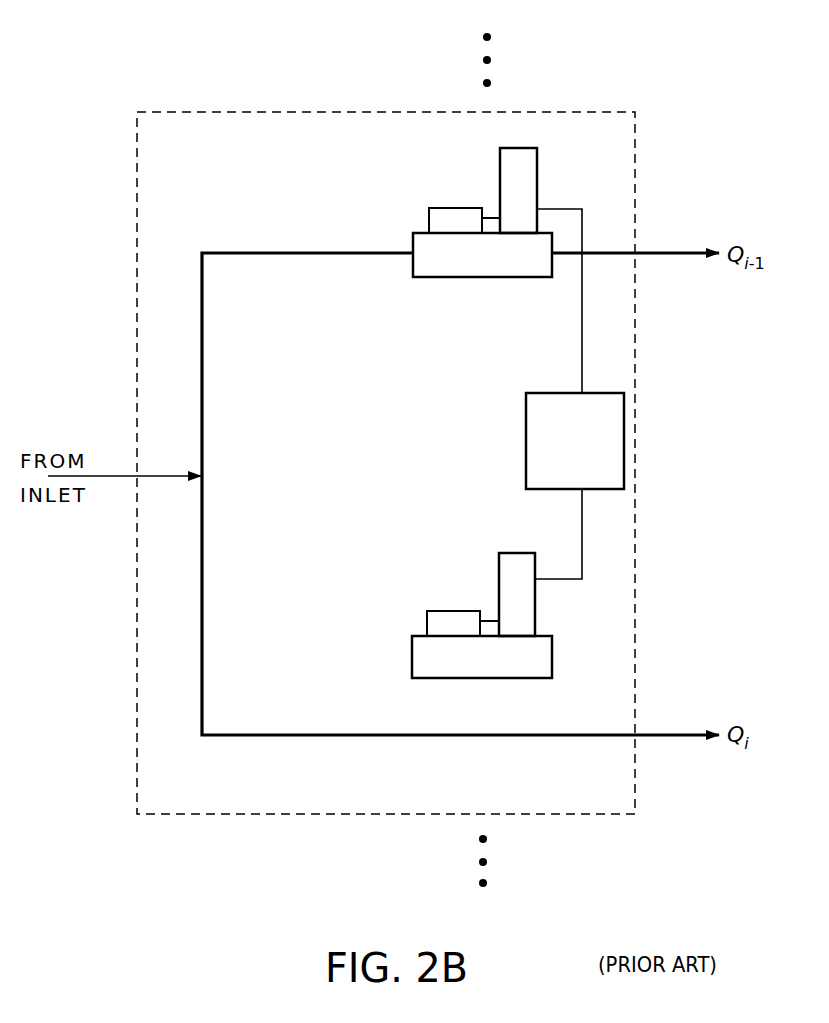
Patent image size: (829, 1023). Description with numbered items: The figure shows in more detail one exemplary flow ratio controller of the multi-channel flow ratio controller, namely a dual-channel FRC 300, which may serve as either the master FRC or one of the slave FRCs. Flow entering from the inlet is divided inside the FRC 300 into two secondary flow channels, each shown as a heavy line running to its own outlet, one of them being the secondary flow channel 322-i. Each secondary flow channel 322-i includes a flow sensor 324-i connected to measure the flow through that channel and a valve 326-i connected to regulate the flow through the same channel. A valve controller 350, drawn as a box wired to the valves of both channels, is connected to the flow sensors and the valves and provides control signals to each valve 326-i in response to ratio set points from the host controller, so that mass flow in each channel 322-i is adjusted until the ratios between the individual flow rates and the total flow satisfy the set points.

The dual-channel FRC 300 is at (317, 815).
The secondary flow channel 322-i is at (228, 735).
The flow sensor 324-i is at (452, 616).
The valve 326-i is at (528, 176).
The valve controller 350 is at (615, 431).